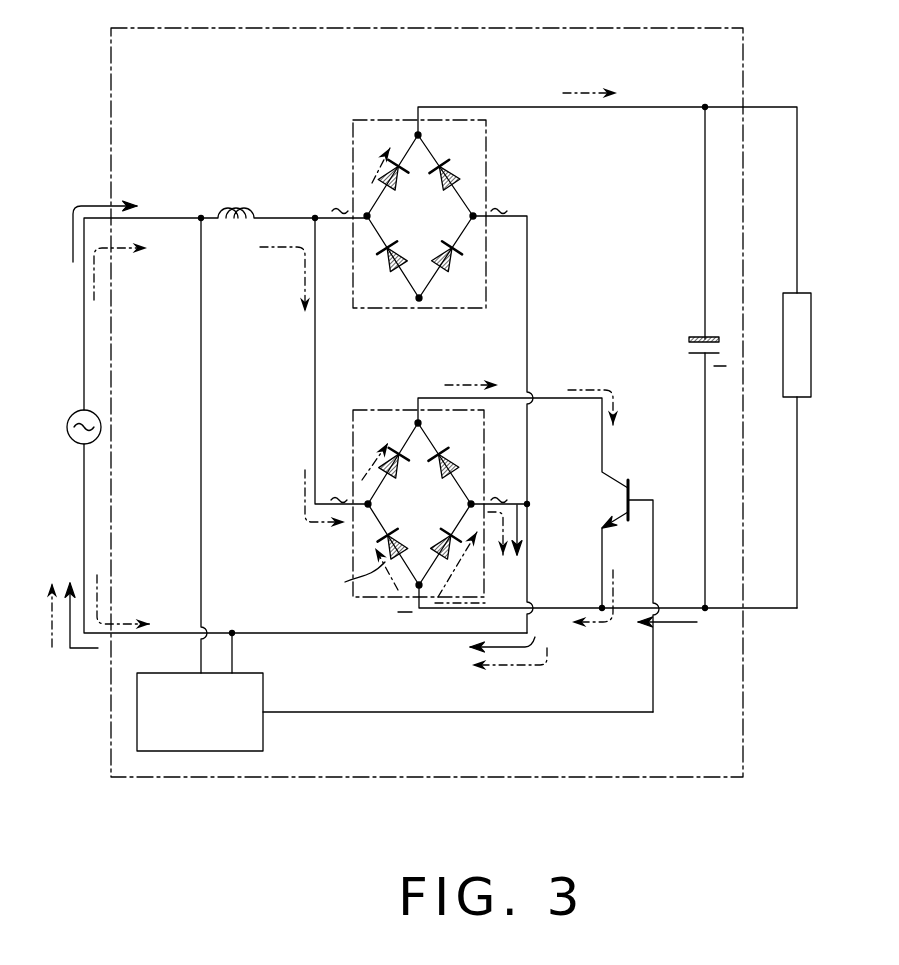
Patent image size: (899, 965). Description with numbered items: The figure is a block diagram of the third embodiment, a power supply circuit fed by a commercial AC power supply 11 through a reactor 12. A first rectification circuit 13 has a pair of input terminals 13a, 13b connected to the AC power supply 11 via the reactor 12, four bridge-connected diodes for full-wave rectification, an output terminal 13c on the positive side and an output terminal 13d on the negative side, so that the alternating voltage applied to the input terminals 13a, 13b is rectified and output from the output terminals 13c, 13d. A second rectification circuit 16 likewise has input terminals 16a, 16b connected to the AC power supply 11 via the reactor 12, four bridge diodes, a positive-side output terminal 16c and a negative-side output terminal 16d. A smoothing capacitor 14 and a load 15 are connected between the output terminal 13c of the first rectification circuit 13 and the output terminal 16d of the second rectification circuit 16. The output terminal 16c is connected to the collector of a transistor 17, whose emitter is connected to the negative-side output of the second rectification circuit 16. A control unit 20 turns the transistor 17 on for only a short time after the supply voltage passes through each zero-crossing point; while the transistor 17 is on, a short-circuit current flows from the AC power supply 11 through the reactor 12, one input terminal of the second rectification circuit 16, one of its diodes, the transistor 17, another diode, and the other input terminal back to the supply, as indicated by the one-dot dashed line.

The commercial AC power supply 11 is at (78, 412).
The reactor 12 is at (243, 206).
The first rectification circuit 13 is at (370, 118).
The input terminal 13a is at (366, 214).
The input terminal 13b is at (474, 214).
The output terminal on the positive side 13c is at (420, 133).
The output terminal on the negative side 13d is at (419, 300).
The smoothing capacitor 14 is at (700, 338).
The load 15 is at (798, 292).
The second rectification circuit 16 is at (372, 408).
The input terminal 16a is at (367, 506).
The input terminal 16b is at (472, 502).
The output terminal on the positive side 16c is at (419, 421).
The output terminal on the negative side 16d is at (418, 587).
The transistor 17 is at (616, 480).
The control unit 20 is at (265, 697).